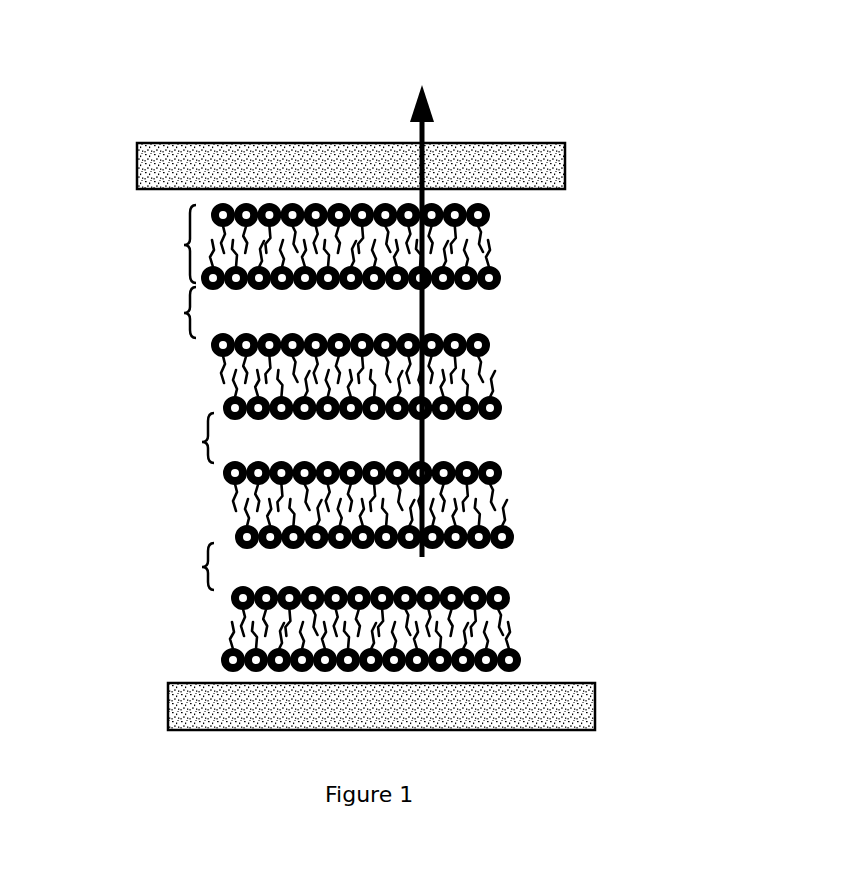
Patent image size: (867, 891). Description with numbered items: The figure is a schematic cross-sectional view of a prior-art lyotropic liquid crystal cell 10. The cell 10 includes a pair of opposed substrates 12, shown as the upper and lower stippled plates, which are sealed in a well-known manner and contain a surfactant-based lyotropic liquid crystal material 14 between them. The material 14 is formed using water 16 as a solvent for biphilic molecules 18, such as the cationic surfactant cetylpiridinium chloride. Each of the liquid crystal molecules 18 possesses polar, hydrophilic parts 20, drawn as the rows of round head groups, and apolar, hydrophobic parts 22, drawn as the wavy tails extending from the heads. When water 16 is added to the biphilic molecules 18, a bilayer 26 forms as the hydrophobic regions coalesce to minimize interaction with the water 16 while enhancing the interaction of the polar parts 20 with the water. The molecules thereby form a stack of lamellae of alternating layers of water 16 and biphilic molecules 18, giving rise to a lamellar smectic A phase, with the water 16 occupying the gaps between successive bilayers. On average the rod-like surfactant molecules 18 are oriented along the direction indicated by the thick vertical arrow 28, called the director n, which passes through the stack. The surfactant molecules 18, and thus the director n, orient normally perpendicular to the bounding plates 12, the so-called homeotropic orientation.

The lyotropic liquid crystal cell 10 is at (97, 127).
The substrate 12 is at (538, 170).
The lyotropic liquid crystal material 14 is at (578, 349).
The water 16 is at (182, 313).
The biphilic molecules 18 is at (508, 225).
The polar parts 20 is at (508, 598).
The apolar parts 22 is at (505, 512).
The bilayer 26 is at (182, 245).
The thick vertical arrow 28 is at (426, 306).